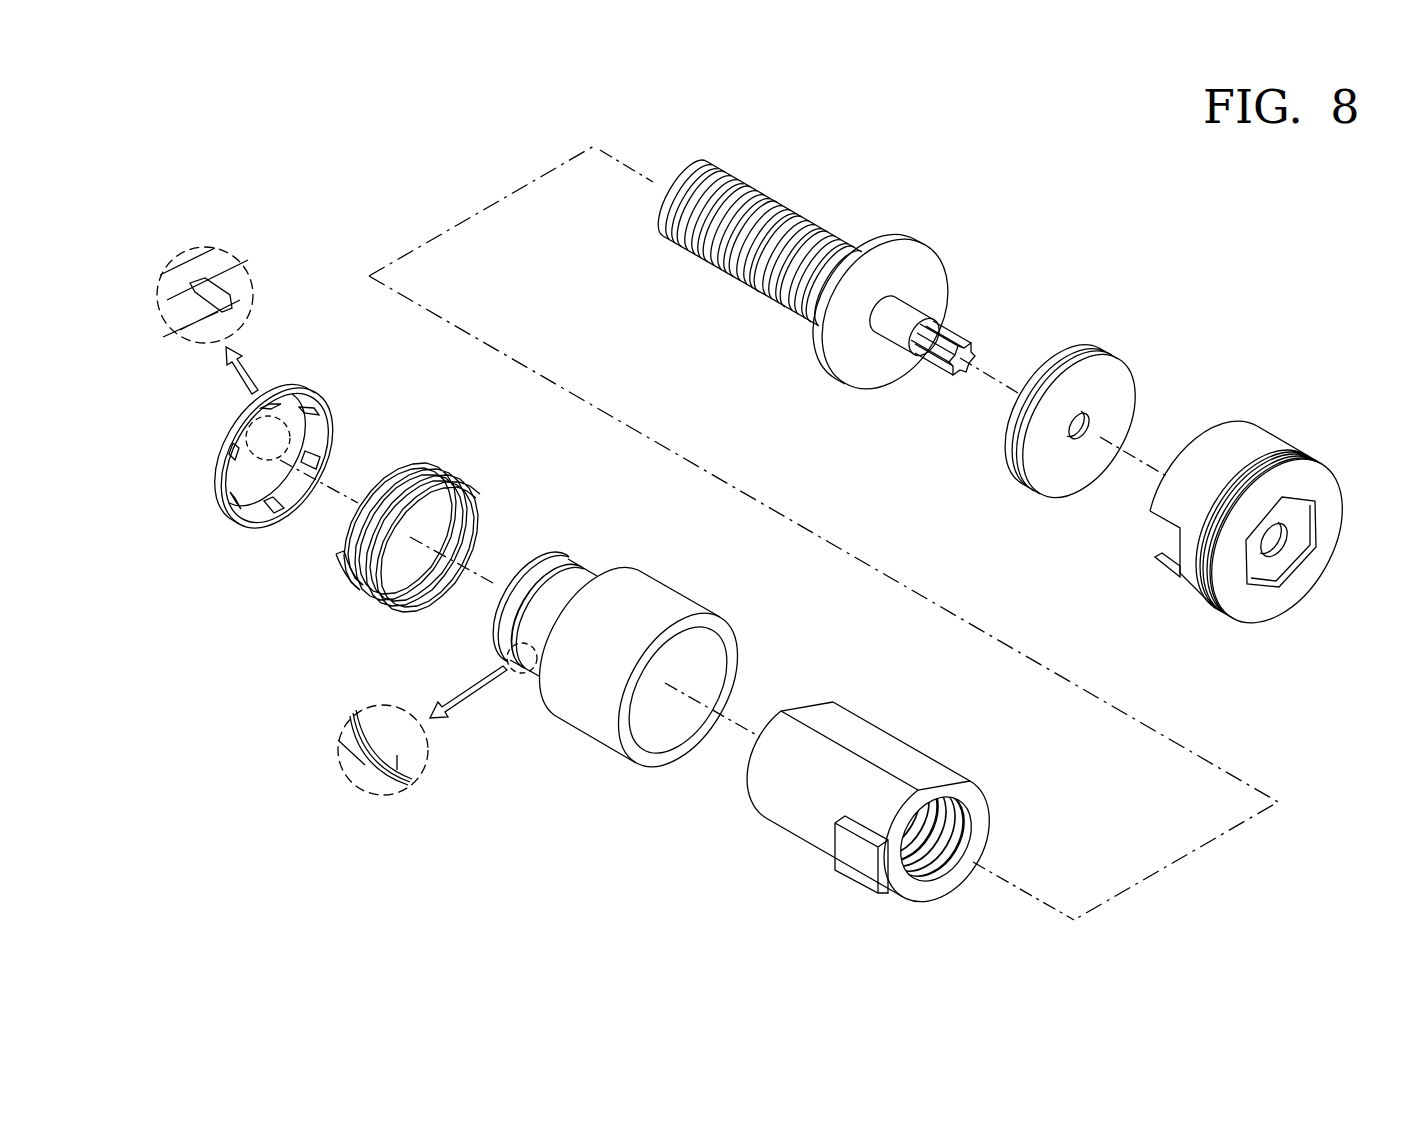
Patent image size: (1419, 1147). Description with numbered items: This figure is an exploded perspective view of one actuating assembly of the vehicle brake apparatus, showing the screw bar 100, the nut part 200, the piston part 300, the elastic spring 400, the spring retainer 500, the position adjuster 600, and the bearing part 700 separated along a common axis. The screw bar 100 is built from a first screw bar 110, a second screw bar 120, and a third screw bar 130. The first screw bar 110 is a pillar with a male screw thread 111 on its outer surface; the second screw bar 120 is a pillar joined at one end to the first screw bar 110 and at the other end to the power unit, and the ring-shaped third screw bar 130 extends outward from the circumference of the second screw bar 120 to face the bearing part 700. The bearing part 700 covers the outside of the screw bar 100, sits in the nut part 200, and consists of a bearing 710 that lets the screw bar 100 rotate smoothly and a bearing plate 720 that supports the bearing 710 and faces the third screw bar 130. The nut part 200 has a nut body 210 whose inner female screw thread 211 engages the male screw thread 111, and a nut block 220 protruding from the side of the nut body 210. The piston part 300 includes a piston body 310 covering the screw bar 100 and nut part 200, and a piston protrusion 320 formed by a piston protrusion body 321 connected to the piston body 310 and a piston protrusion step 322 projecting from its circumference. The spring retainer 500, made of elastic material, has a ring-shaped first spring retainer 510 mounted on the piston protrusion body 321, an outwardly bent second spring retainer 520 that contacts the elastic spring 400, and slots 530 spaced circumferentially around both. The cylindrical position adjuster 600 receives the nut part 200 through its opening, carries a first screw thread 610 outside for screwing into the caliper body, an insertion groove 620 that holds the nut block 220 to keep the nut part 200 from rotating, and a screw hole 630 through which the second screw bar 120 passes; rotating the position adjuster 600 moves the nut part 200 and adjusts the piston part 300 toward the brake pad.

The screw bar 100 is at (837, 283).
The first screw bar 110 is at (752, 282).
The male screw thread 111 is at (778, 216).
The second screw bar 120 is at (900, 331).
The third screw bar 130 is at (932, 278).
The nut part 200 is at (828, 833).
The nut body 210 is at (863, 753).
The female screw thread 211 is at (937, 865).
The nut block 220 is at (867, 865).
The piston part 300 is at (534, 699).
The piston body 310 is at (592, 715).
The piston protrusion 320 is at (453, 699).
The piston protrusion body 321 is at (399, 778).
The piston protrusion step 322 is at (380, 775).
The elastic spring 400 is at (340, 595).
The spring retainer 500 is at (233, 366).
The first spring retainer 510 is at (235, 292).
The second spring retainer 520 is at (216, 262).
The slots 530 is at (190, 290).
The position adjuster 600 is at (1231, 490).
The first screw thread 610 is at (1212, 600).
The insertion groove 620 is at (1158, 566).
The screw hole 630 is at (1285, 545).
The bearing part 700 is at (1129, 383).
The bearing 710 is at (1068, 355).
The bearing plate 720 is at (1150, 375).